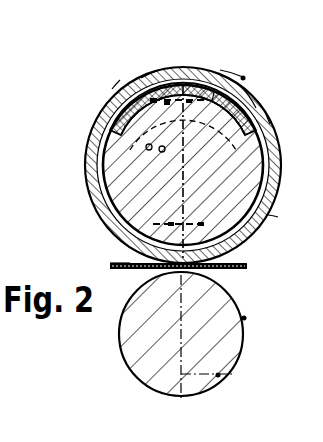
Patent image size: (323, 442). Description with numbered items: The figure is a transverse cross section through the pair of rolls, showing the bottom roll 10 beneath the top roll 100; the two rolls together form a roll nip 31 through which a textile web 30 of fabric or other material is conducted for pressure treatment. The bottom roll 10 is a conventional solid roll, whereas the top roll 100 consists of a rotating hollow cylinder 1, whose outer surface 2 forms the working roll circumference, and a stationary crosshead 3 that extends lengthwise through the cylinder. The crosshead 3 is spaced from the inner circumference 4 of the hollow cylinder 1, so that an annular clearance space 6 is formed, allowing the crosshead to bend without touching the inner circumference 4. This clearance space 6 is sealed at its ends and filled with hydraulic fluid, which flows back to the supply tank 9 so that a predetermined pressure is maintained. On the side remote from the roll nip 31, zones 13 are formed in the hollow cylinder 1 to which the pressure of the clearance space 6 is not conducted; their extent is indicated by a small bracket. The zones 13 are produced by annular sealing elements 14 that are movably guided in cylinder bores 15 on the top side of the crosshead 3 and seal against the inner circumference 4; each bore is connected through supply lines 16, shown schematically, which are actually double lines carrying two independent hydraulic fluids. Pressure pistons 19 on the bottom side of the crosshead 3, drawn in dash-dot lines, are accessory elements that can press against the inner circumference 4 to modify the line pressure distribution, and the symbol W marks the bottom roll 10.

The hollow cylinder 1 is at (84, 172).
The outer surface 2 is at (284, 148).
The crosshead 3 is at (270, 124).
The inner circumference 4 is at (256, 108).
The clearance space 6 is at (141, 78).
The supply tank 9 is at (4, 144).
The bottom roll 10 is at (244, 316).
The zones 13 is at (184, 59).
The annular sealing elements 14 is at (214, 92).
The cylinder bores 15 is at (112, 89).
The supply lines 16 is at (159, 150).
The pressure pistons 19 is at (278, 217).
The textile web 30 is at (258, 263).
The roll nip 31 is at (126, 258).
The top roll 100 is at (243, 77).
The wheel axis offset W is at (218, 375).